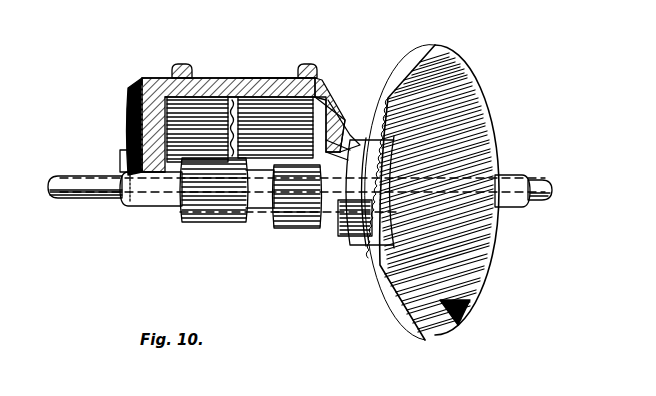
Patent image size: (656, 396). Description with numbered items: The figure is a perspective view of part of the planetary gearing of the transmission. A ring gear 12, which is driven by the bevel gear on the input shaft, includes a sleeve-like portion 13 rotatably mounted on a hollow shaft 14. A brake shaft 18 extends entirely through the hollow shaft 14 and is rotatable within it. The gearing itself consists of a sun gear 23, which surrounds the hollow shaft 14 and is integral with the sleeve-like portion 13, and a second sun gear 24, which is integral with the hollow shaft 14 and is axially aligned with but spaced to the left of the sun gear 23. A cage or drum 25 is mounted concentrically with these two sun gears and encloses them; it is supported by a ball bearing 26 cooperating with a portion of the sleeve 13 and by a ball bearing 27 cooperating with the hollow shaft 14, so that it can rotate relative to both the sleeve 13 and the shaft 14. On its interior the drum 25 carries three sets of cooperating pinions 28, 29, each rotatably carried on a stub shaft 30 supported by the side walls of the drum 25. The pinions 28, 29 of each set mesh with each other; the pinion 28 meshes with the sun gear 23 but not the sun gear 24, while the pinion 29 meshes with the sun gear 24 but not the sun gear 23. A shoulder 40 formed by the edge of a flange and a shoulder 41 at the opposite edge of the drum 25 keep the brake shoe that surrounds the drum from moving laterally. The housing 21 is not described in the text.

The ring gear 12 is at (468, 102).
The sleeve-like portion 13 is at (356, 222).
The hollow shaft 14 is at (148, 192).
The brake shaft 18 is at (64, 184).
The housing 21 is at (132, 118).
The sun gear 23 is at (300, 214).
The second sun gear 24 is at (208, 212).
The cage or drum 25 is at (286, 78).
The ball bearing 26 is at (386, 143).
The ball bearing 27 is at (126, 160).
The pinion 28 is at (256, 108).
The pinion 29 is at (212, 112).
The stub shaft 30 is at (320, 120).
The shoulder 40 is at (184, 66).
The shoulder 41 is at (308, 70).